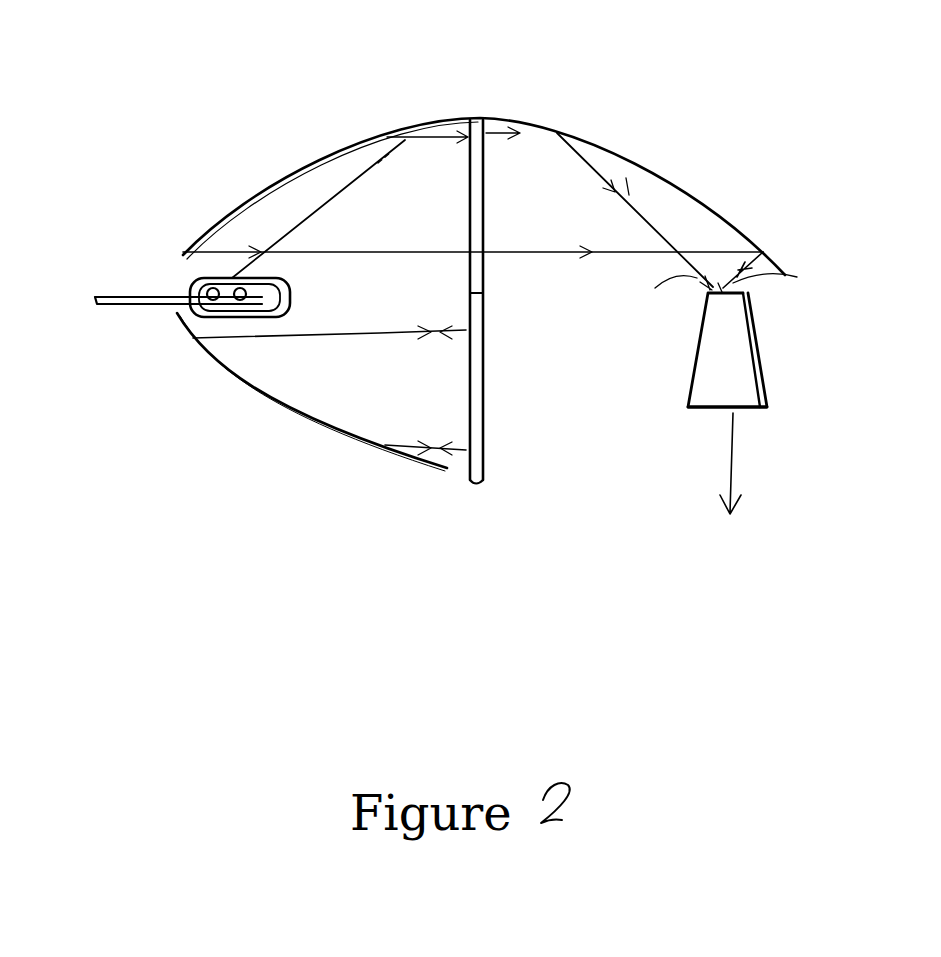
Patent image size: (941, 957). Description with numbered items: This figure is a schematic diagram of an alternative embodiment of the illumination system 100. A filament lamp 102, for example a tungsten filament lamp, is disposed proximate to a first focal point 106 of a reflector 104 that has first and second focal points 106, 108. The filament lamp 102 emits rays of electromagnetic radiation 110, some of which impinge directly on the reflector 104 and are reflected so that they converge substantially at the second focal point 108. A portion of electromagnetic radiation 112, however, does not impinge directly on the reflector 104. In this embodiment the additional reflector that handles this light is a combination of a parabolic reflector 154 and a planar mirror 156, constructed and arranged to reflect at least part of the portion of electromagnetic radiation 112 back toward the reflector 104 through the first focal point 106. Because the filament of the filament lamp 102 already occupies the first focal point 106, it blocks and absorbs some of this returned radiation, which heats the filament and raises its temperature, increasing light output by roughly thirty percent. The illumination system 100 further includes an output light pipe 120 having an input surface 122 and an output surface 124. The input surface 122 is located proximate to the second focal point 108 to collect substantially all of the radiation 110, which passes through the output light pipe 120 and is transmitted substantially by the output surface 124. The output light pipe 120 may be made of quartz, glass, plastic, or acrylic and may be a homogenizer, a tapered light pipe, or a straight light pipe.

The illumination system 100 is at (923, 538).
The filament lamp 102 is at (225, 299).
The reflector 104 is at (538, 108).
The first focal point 106 is at (333, 204).
The second focal point 108 is at (768, 284).
The rays of electromagnetic radiation 110 is at (487, 380).
The portion of electromagnetic radiation 112 is at (405, 448).
The output light pipe 120 is at (784, 369).
The input surface 122 is at (671, 302).
The output surface 124 is at (699, 432).
The parabolic reflector 154 is at (320, 445).
The planar mirror 156 is at (499, 409).